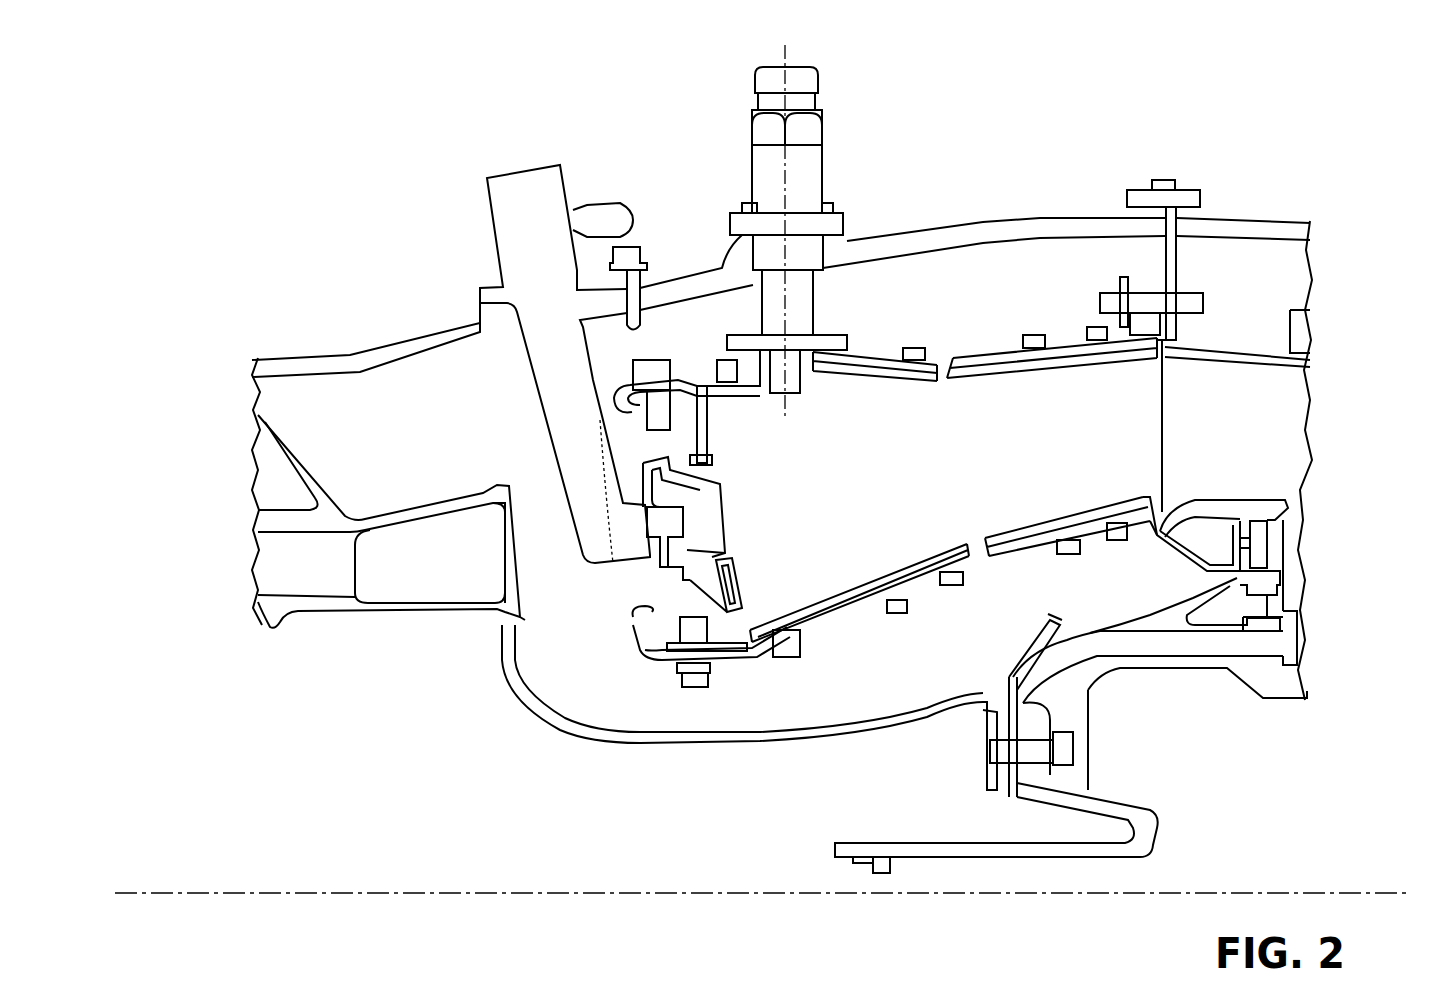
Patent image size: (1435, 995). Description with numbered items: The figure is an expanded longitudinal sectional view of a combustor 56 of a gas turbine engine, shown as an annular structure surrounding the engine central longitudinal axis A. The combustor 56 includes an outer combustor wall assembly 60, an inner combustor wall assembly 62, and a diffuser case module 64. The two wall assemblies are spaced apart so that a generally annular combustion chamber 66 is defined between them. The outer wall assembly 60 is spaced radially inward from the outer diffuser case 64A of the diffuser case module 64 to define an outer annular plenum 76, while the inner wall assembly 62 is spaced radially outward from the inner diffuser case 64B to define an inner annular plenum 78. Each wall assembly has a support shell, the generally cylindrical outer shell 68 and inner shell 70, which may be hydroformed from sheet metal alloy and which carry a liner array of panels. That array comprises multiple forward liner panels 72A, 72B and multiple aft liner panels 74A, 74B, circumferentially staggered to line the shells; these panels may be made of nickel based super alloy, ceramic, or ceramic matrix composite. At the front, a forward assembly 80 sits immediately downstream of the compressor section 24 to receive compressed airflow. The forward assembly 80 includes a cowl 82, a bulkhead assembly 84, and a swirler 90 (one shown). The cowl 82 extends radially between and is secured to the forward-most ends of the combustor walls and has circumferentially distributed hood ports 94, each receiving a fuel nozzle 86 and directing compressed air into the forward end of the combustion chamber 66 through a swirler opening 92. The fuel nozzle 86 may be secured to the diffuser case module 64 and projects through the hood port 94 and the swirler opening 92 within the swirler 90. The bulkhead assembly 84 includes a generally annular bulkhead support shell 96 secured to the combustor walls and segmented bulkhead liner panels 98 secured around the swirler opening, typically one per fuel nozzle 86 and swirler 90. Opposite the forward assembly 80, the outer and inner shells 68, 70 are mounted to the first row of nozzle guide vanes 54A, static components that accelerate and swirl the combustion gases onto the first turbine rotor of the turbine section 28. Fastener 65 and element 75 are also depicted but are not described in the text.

The compressor section 24 is at (403, 553).
The turbine section 28 is at (1348, 382).
The first row of Nozzle Guide Vanes 54A is at (1159, 506).
The combustor 56 is at (861, 396).
The outer combustor wall assembly 60 is at (895, 472).
The inner combustor wall assembly 62 is at (922, 593).
The diffuser case module 64 is at (781, 500).
The outer diffuser case 64A is at (893, 242).
The inner diffuser case 64B is at (838, 750).
The case flange fastener 65 is at (1077, 220).
The combustion chamber 66 is at (954, 481).
The outer support shell 68 is at (950, 422).
The inner support shell 70 is at (1017, 555).
The forward liner panel 72A is at (829, 390).
The forward liner panel 72B is at (870, 580).
The aft liner panel 74A is at (1022, 378).
The aft liner panel 74B is at (964, 542).
The liner aft support 75 is at (1120, 548).
The outer annular plenum 76 is at (913, 313).
The inner annular plenum 78 is at (854, 698).
The forward assembly 80 is at (643, 660).
The cowl 82 is at (642, 625).
The bulkhead assembly 84 is at (787, 240).
The fuel nozzle 86 is at (549, 267).
The swirler 90 is at (720, 560).
The swirler opening 92 is at (708, 500).
The hood port 94 is at (640, 613).
The bulkhead support shell 96 is at (643, 659).
The bulkhead liner panel 98 is at (730, 600).
The engine central longitudinal axis A is at (1255, 892).